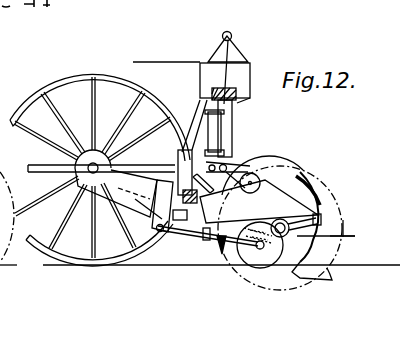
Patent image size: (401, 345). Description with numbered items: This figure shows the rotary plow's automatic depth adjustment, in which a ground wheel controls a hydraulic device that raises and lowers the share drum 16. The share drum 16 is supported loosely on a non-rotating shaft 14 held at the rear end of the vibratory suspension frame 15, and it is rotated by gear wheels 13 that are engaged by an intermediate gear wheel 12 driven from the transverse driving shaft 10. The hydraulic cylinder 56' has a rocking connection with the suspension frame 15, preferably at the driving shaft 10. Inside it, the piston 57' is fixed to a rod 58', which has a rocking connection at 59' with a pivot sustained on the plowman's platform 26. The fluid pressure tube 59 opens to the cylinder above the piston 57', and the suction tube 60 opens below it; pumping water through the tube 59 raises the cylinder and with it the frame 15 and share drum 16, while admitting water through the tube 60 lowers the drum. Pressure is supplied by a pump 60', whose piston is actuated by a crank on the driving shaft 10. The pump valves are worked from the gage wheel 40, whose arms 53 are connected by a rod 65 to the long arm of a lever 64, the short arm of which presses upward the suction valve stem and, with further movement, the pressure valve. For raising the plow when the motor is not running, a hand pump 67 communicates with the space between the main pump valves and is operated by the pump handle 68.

The transverse driving shaft 10 is at (227, 162).
The intermediate gear wheel 12 is at (264, 176).
The gear wheel 13 is at (352, 240).
The non-rotating shaft 14 is at (287, 218).
The vibratory frame 15 is at (259, 201).
The share drum 16 is at (326, 221).
The stand or platform 26 is at (211, 83).
The gage wheel 40 is at (259, 250).
The arms 53 is at (222, 254).
The hydraulic cylinder 56' is at (238, 133).
The piston 57' is at (246, 122).
The rod 58' is at (166, 54).
The fluid pressure tube 59 is at (202, 79).
The rocking connection 59' is at (237, 44).
The suction tube 60 is at (178, 166).
The pump 60' is at (261, 166).
The lever 64 is at (190, 236).
The rod 65 is at (207, 241).
The hand pump 67 is at (160, 232).
The pump handle 68 is at (116, 192).